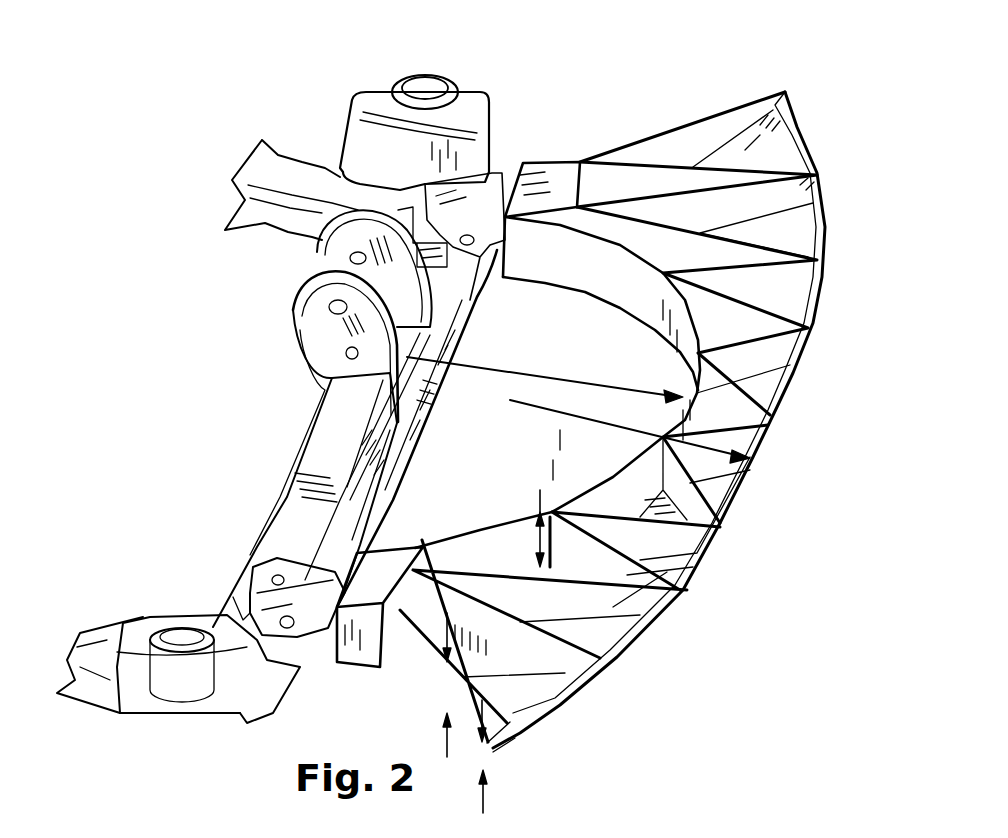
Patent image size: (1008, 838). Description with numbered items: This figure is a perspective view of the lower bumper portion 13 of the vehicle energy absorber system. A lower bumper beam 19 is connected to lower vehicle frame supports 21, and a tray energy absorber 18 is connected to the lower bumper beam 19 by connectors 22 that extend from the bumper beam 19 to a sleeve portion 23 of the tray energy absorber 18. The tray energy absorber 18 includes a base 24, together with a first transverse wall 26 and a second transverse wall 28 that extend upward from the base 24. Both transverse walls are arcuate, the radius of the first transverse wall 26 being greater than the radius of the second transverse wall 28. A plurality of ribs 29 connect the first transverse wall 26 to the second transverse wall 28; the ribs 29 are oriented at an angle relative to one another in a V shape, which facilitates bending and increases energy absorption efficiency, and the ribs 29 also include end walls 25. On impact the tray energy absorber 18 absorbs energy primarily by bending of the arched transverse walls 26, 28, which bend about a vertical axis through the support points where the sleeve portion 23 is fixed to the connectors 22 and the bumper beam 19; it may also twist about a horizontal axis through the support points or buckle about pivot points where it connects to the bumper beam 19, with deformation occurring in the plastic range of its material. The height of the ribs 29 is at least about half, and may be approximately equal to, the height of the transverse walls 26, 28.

The lower bumper portion 13 is at (456, 68).
The tray energy absorber 18 is at (627, 444).
The lower bumper beam 19 is at (340, 445).
The lower vehicle frame supports 21 is at (275, 170).
The connectors 22 is at (337, 575).
The sleeve portion 23 is at (390, 567).
The base 24 is at (745, 150).
The end walls 25 is at (652, 150).
The first transverse wall 26 is at (807, 163).
The second transverse wall 28 is at (597, 272).
The ribs 29 is at (610, 607).